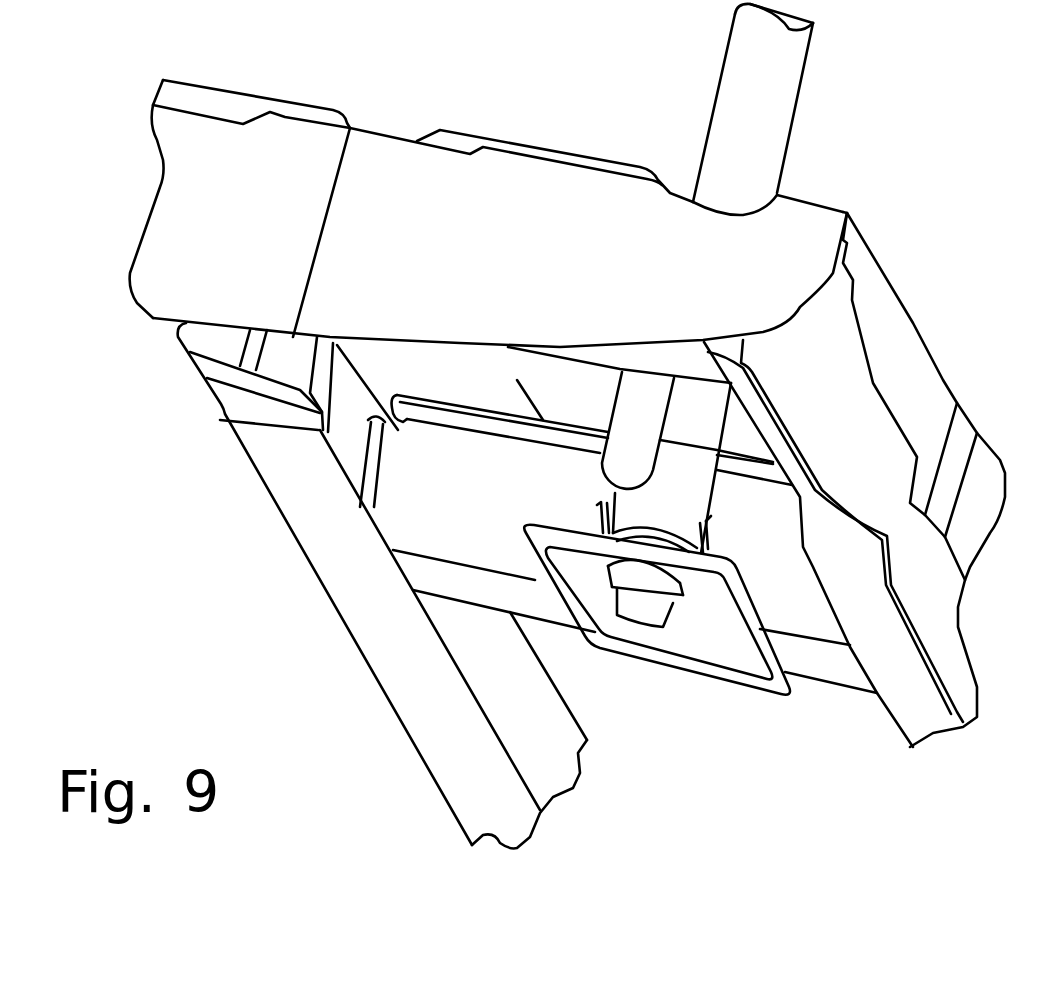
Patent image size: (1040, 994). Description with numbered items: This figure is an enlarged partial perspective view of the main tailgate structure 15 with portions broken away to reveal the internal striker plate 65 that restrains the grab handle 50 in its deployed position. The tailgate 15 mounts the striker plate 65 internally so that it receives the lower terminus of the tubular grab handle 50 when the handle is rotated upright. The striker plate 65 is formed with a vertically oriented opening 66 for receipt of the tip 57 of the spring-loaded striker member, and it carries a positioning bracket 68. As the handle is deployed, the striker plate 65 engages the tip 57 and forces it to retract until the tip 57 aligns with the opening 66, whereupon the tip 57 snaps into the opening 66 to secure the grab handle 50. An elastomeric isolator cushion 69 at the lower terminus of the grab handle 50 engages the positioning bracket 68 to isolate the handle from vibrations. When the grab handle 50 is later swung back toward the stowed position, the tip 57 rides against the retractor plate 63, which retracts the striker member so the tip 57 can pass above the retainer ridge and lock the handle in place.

The tailgate 15 is at (297, 483).
The grab handle 50 is at (773, 117).
The tip 57 is at (645, 627).
The retractor plate 63 is at (632, 405).
The striker plate 65 is at (752, 662).
The opening 66 is at (677, 605).
The positioning bracket 68 is at (598, 522).
The elastomeric isolator cushion 69 is at (687, 475).